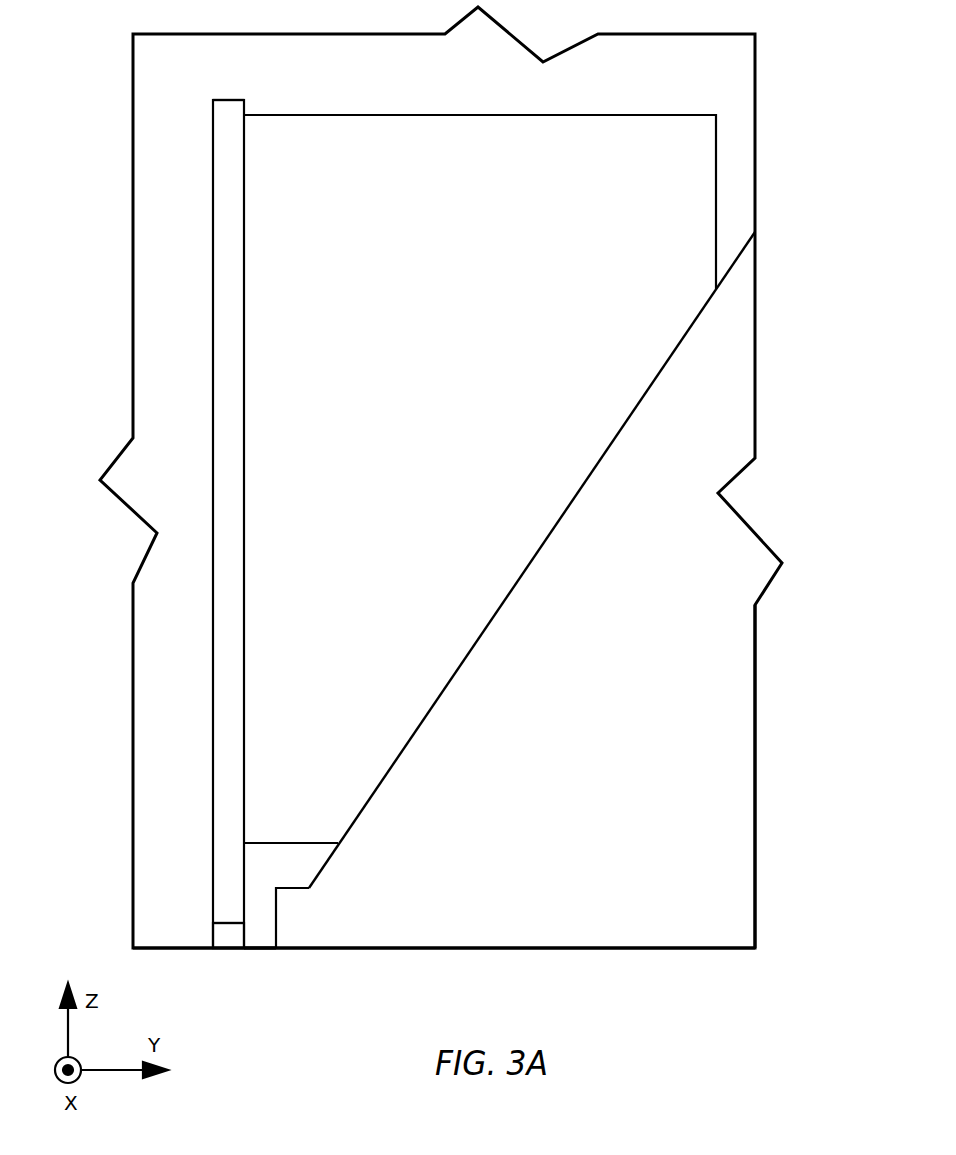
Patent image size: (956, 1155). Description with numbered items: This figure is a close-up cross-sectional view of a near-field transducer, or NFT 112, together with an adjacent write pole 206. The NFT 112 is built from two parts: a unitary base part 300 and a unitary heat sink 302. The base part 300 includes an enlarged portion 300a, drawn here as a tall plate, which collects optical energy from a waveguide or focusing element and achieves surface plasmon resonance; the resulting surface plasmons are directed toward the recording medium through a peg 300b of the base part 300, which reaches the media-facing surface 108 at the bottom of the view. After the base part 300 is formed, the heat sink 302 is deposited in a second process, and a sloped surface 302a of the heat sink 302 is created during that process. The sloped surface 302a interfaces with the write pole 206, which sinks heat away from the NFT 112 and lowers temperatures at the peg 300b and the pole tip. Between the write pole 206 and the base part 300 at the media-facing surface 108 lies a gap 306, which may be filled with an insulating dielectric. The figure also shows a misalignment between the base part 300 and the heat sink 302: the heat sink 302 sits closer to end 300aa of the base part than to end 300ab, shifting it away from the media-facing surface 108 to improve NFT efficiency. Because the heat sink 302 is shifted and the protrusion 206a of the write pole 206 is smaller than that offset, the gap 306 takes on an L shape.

The near-field transducer (NFT) 112 is at (760, 157).
The media-facing surface 108 is at (445, 950).
The write pole 206 is at (614, 940).
The protrusion of the write pole 206a is at (305, 918).
The heat sink 302 is at (413, 122).
The sloped surface 302a is at (407, 740).
The gap 306 is at (262, 940).
The base part 300 is at (164, 518).
The enlarged portion 300a is at (213, 465).
The end of the base part 300aa is at (228, 98).
The end of the base part 300ab is at (220, 923).
The peg 300b is at (228, 940).